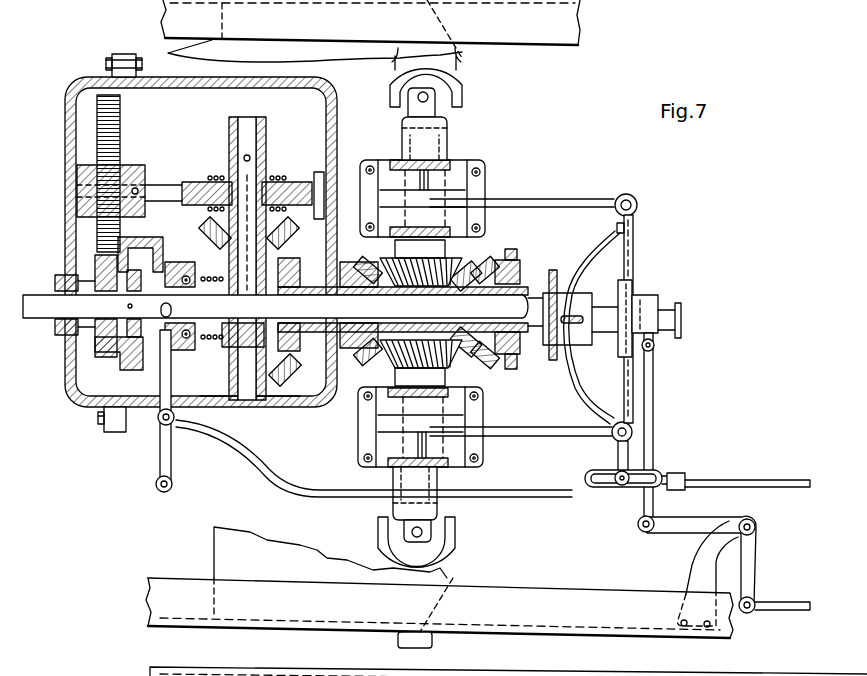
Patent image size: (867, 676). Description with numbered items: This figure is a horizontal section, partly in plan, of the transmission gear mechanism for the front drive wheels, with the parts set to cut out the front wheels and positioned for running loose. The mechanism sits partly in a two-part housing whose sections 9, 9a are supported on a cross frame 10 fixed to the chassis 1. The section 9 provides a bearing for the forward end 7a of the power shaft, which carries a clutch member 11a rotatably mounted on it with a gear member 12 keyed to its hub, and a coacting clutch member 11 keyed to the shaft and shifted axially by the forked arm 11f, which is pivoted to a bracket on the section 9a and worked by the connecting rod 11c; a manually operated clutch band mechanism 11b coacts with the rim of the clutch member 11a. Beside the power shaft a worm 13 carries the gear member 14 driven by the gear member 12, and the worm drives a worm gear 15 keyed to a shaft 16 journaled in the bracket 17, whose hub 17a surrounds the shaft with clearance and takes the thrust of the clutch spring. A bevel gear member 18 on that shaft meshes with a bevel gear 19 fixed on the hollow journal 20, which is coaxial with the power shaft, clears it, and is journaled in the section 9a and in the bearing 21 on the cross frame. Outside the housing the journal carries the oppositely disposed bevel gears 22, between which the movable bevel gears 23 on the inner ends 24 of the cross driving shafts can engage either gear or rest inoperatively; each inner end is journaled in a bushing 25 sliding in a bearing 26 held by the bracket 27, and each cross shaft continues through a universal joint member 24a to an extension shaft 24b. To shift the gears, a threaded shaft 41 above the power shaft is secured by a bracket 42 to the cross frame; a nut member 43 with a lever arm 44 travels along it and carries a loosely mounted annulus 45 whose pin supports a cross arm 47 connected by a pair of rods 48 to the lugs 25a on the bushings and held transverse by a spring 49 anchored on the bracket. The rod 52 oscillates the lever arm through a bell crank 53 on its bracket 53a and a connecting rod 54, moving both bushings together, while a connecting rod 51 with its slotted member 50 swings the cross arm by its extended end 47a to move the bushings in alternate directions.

The chassis 1 is at (581, 30).
The forward end of power shaft 7a is at (40, 320).
The housing section 9 is at (73, 405).
The housing section 9a is at (292, 410).
The cross frame 10 is at (358, 54).
The clutch member 11 is at (162, 347).
The clutch member 11a is at (137, 262).
The clutch band mechanism 11b is at (124, 368).
The connecting rod 11c is at (248, 466).
The forked arm 11f is at (158, 458).
The gear member 12 is at (108, 357).
The worm 13 is at (218, 180).
The gear member 14 is at (120, 136).
The worm gear 15 is at (302, 183).
The shaft 16 is at (250, 121).
The bracket 17 is at (227, 130).
The hub 17a is at (240, 349).
The bevel gear member 18 is at (210, 232).
The bevel gear 19 is at (282, 372).
The hollow journal 20 is at (460, 258).
The bearing 21 is at (530, 262).
The bevel gears 22 is at (365, 356).
The movable bevel gears 23 is at (382, 265).
The inner end of driving shaft 24 is at (418, 195).
The universal joint member 24a is at (461, 95).
The extension shaft 24b is at (433, 642).
The bushing 25 is at (452, 161).
The lug 25a is at (455, 203).
The bearing 26 is at (486, 172).
The bracket 27 is at (395, 160).
The shaft 41 is at (665, 334).
The bracket 42 is at (573, 372).
The nut member 43 is at (683, 306).
The lever arm 44 is at (650, 300).
The annulus 45 is at (632, 280).
The cross arm 47 is at (636, 236).
The extended end of cross arm 47a is at (618, 455).
The rods 48 is at (586, 197).
The spring 49 is at (582, 256).
The slotted member 50 is at (610, 488).
The connecting rod 51 is at (738, 480).
The rod 52 is at (655, 426).
The bell crank 53 is at (757, 553).
The bracket 53a is at (690, 571).
The connecting rod 54 is at (770, 603).